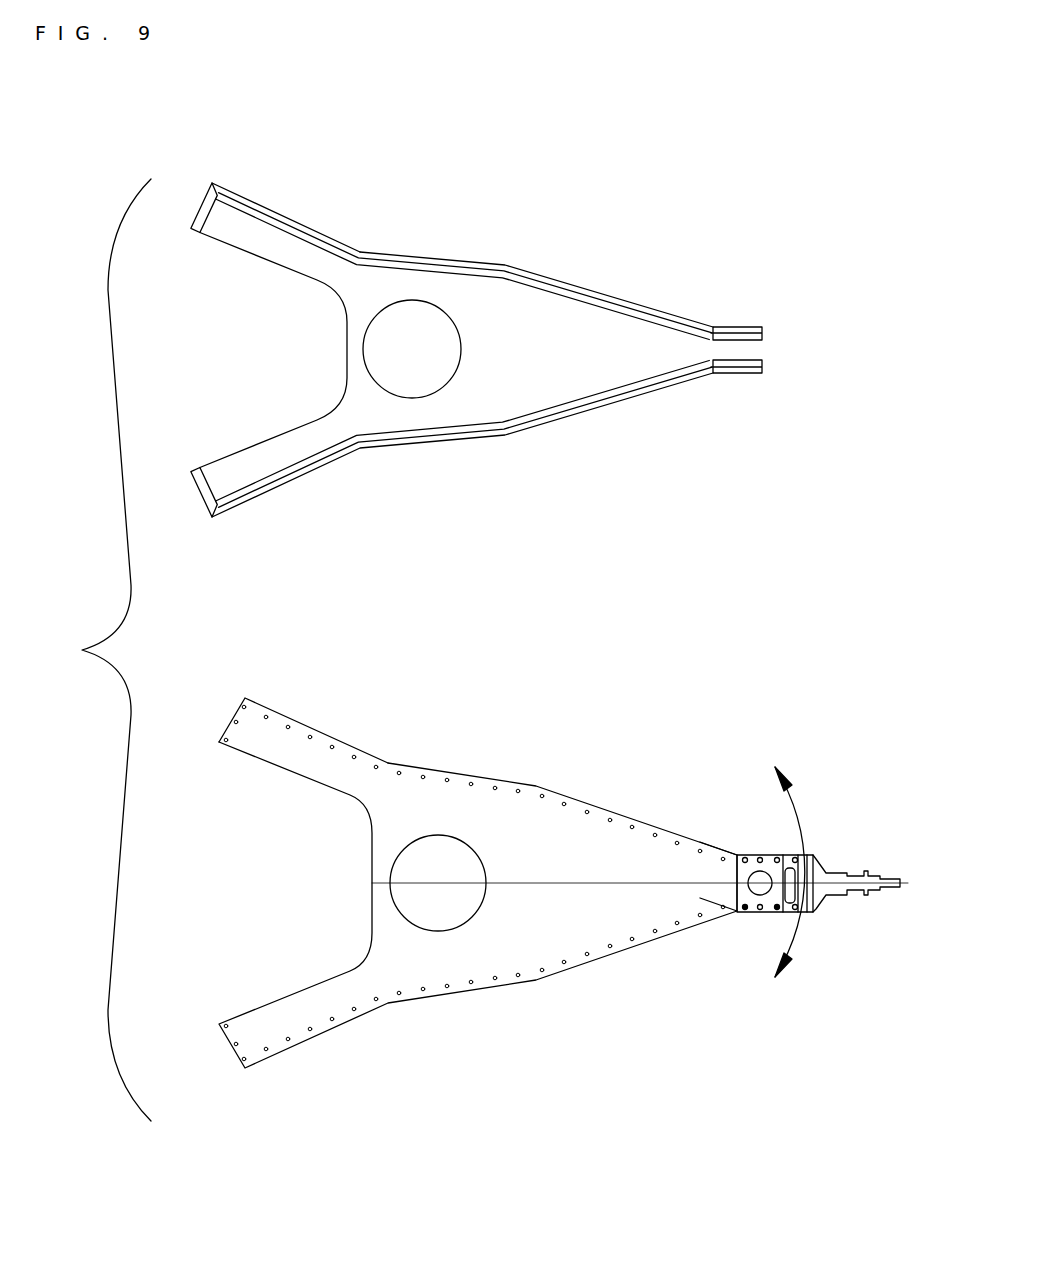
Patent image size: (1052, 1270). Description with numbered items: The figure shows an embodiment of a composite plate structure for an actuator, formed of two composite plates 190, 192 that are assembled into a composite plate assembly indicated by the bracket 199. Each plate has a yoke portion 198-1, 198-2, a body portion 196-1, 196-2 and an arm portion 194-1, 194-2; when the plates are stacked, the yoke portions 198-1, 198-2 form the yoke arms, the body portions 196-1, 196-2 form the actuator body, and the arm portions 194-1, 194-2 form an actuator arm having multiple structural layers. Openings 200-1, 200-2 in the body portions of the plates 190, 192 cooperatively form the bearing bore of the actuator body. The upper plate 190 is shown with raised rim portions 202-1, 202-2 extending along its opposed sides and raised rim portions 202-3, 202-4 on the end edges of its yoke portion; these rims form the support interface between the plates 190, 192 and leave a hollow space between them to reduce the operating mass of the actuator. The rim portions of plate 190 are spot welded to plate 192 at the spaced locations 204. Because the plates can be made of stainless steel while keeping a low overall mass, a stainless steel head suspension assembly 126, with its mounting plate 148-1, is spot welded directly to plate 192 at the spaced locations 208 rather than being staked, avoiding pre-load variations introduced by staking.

The head suspension assembly 126 is at (810, 855).
The mounting plate 148-1 is at (775, 913).
The composite plate 190 is at (453, 293).
The composite plate 192 is at (514, 835).
The arm portion 194-1 is at (668, 334).
The arm portion 194-2 is at (708, 825).
The body portion 196-1 is at (452, 232).
The body portion 196-2 is at (430, 768).
The yoke portion 198-1 is at (258, 182).
The yoke portion 198-2 is at (308, 700).
The bracket 199 is at (94, 650).
The opening 200-1 is at (428, 385).
The opening 200-2 is at (427, 930).
The raised rim portion 202-1 is at (277, 213).
The raised rim portion 202-2 is at (575, 411).
The raised rim portion 202-3 is at (212, 207).
The raised rim portion 202-4 is at (192, 482).
The spot weld locations 204 is at (473, 783).
The spot weld locations 208 is at (777, 853).